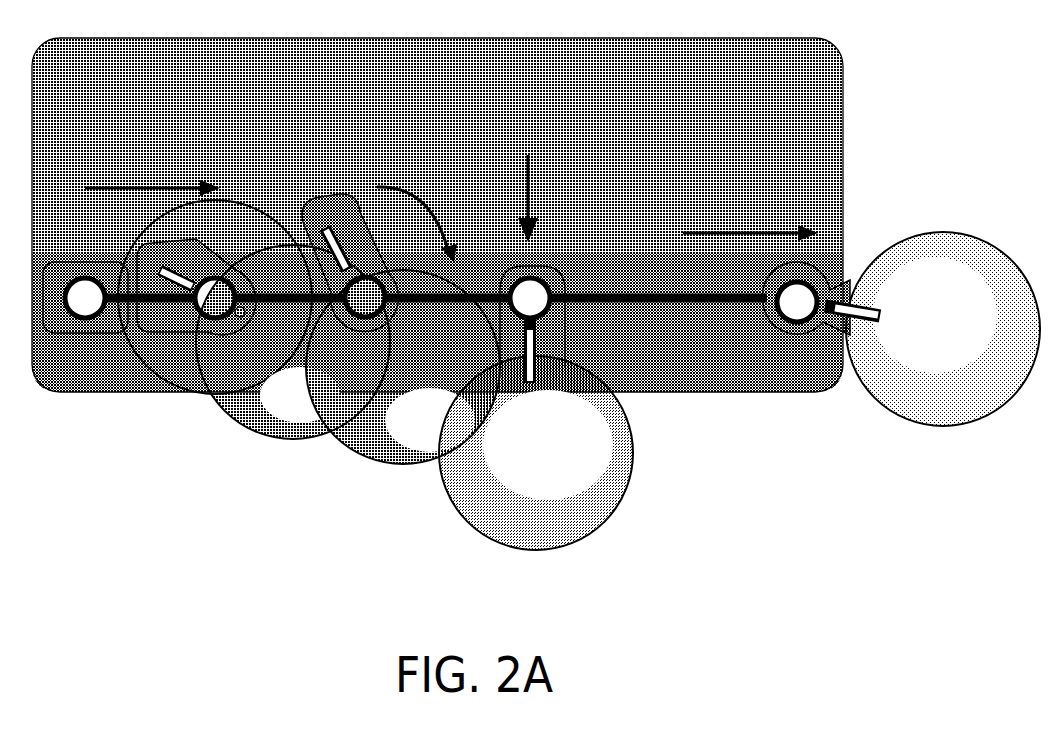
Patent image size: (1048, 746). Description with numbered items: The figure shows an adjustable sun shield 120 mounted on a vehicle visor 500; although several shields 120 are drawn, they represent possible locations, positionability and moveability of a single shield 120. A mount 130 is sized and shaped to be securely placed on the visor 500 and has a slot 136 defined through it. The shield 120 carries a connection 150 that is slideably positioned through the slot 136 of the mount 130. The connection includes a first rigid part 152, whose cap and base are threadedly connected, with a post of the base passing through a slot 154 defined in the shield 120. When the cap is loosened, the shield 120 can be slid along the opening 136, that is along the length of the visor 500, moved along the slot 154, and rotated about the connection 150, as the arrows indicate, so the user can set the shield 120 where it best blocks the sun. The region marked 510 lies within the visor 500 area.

The visor 500 is at (823, 92).
The interior region of enclosure 510 is at (497, 92).
The mount 130 is at (714, 350).
The slot 136 is at (716, 298).
The connection 150 is at (815, 332).
The first rigid part 152 is at (800, 292).
The slot 154 is at (870, 312).
The shield 120 is at (967, 418).